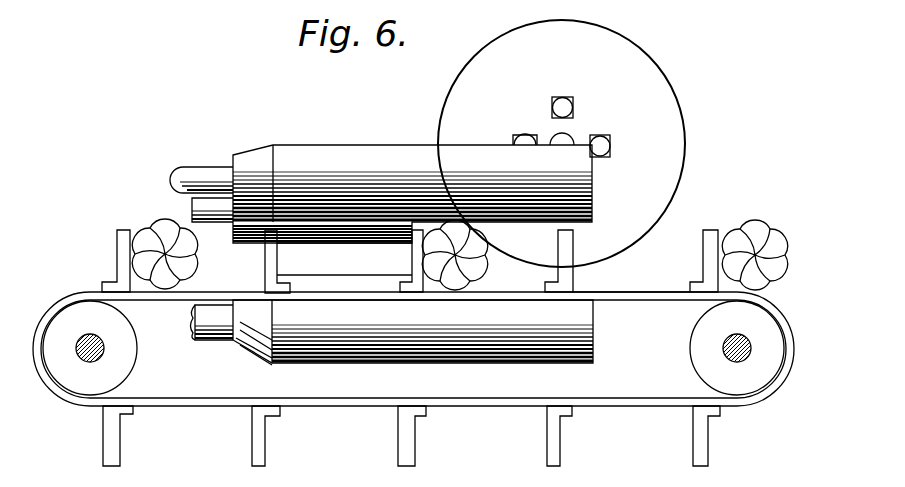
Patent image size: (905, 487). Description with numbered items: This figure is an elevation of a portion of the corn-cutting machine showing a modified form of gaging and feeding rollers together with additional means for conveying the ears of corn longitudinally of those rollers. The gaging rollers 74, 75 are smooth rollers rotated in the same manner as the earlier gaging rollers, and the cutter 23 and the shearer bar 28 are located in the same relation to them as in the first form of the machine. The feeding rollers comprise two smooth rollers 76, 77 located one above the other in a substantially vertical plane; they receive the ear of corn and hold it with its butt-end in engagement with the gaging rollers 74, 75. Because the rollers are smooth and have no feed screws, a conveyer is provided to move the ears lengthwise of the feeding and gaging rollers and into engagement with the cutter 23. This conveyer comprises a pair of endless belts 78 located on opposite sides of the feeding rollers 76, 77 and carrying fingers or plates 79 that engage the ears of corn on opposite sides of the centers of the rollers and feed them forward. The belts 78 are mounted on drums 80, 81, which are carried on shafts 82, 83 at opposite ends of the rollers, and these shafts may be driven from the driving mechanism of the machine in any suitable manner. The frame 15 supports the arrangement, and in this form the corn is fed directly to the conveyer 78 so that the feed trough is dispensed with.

The frame 15 is at (381, 262).
The cutter 23 is at (685, 160).
The shearer bar 28 is at (592, 281).
The gaging roller 74 is at (253, 233).
The gaging roller 75 is at (265, 285).
The feeding roller 76 is at (326, 149).
The feeding roller 77 is at (597, 338).
The endless belt 78 is at (660, 405).
The fingers or plates 79 is at (412, 262).
The drum 80 is at (707, 366).
The drum 81 is at (115, 365).
The shaft 82 is at (722, 346).
The shaft 83 is at (104, 346).